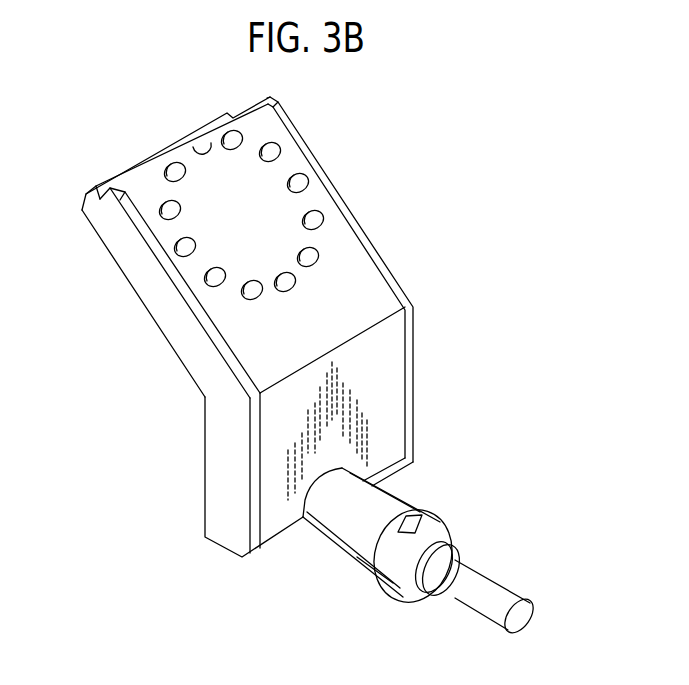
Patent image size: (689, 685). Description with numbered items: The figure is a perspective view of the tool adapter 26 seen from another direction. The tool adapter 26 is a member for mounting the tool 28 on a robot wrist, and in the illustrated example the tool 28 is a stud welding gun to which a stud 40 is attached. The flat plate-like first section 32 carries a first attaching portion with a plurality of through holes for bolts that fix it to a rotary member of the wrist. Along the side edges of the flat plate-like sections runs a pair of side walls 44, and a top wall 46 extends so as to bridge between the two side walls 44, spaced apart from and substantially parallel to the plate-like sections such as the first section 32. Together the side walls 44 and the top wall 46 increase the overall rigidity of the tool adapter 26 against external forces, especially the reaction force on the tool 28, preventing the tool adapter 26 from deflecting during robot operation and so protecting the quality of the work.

The tool adapter 26 is at (318, 355).
The tool 28 is at (407, 498).
The first section 32 is at (167, 140).
The stud 40 is at (500, 580).
The side walls 44 is at (327, 165).
The top wall 46 is at (350, 298).